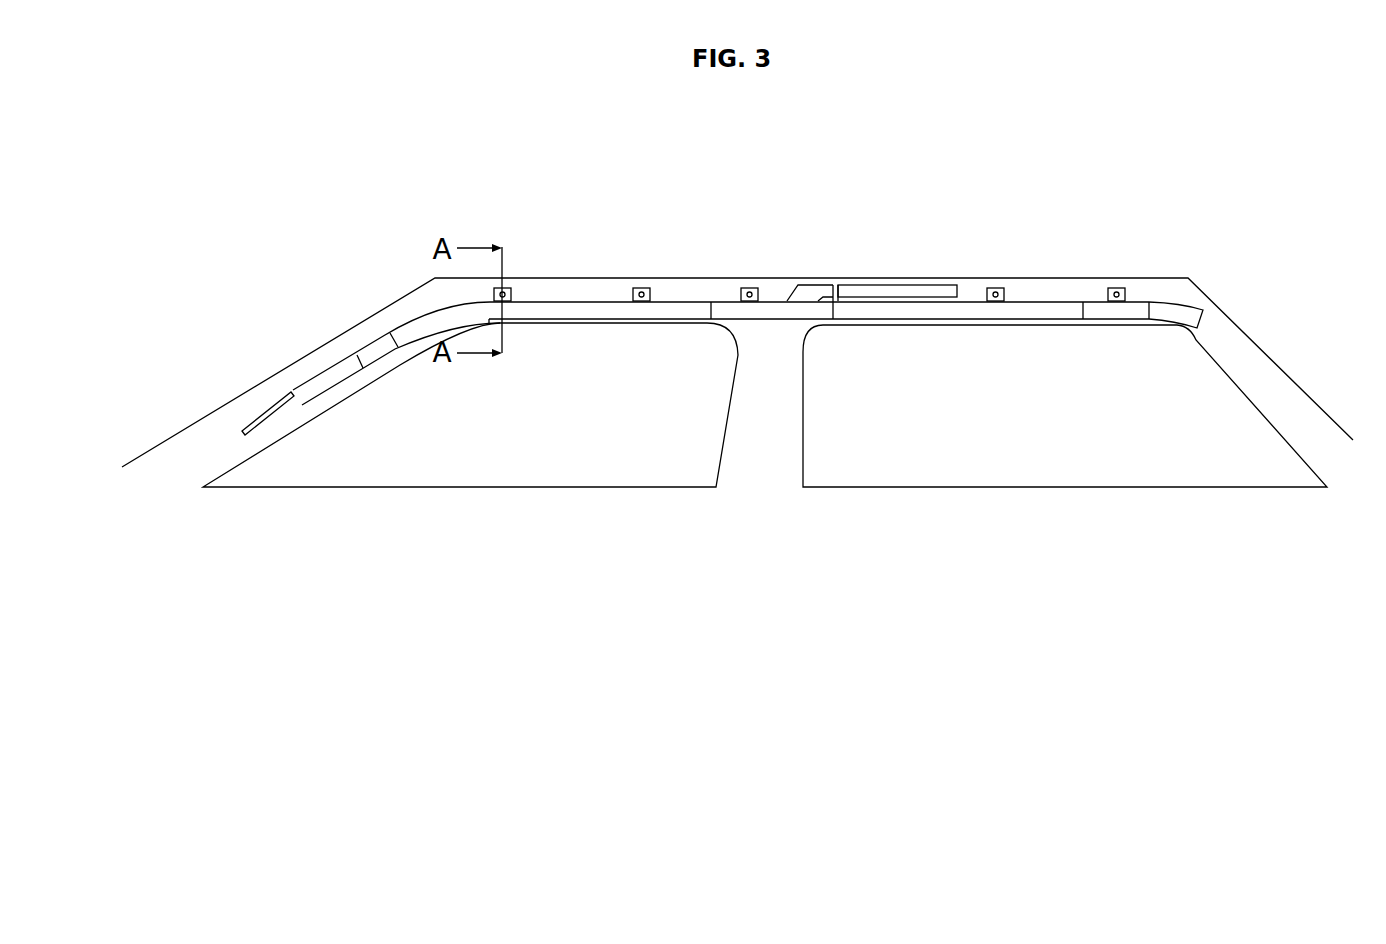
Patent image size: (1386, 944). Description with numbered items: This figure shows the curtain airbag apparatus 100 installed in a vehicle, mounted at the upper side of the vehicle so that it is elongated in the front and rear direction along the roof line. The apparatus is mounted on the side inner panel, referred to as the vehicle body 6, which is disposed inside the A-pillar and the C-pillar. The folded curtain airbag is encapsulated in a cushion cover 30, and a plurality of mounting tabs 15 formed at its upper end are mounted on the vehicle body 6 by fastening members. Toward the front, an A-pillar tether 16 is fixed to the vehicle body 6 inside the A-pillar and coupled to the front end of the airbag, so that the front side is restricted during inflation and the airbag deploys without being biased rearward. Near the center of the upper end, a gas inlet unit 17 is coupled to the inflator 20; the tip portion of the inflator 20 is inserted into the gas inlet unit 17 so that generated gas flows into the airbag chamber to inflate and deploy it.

The curtain airbag apparatus 100 is at (567, 294).
The cushion cover 30 is at (672, 310).
The mounting tabs 15 is at (508, 287).
The gas inlet unit 17 is at (808, 295).
The inflator 20 is at (902, 292).
The vehicle body 6 is at (1087, 288).
The A-pillar tether 16 is at (270, 417).